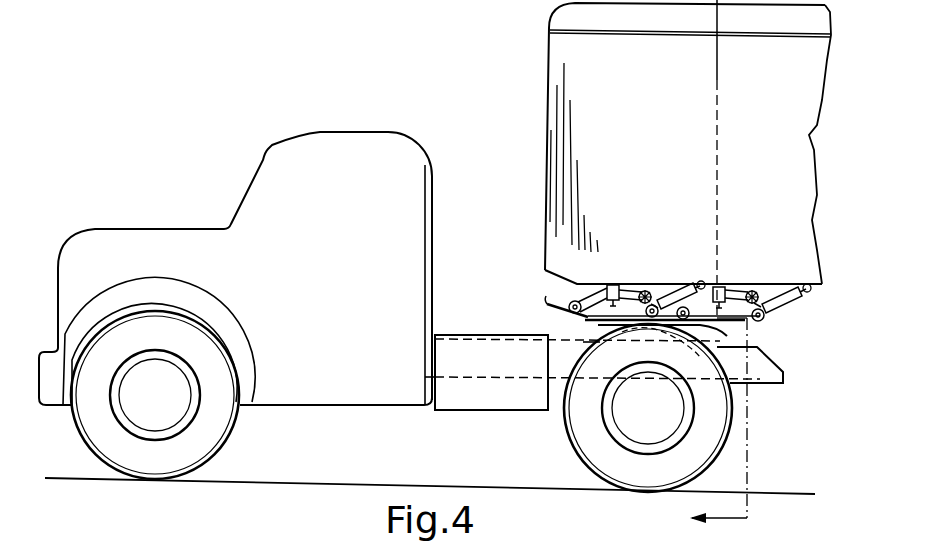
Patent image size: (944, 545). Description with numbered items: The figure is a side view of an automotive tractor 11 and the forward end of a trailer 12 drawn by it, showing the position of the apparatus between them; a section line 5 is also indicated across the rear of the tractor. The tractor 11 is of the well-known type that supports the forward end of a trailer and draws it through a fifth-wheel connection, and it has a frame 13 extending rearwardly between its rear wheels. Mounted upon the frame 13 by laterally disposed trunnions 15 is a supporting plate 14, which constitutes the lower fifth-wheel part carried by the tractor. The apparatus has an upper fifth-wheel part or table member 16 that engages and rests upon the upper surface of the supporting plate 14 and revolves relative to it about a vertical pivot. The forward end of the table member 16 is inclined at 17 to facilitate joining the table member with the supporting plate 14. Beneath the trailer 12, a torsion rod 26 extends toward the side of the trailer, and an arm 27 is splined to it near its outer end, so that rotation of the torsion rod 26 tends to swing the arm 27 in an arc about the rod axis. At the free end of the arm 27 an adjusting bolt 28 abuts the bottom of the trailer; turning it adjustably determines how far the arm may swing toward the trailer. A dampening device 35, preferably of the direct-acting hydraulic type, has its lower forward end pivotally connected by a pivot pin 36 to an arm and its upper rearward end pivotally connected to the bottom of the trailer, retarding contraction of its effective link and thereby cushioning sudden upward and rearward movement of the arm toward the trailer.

The section line 5- 5 is at (726, 266).
The automotive tractor 11 is at (335, 321).
The trailer 12 is at (649, 144).
The frame 13 is at (776, 372).
The supporting plate 14 is at (597, 326).
The trunnions 15 is at (666, 346).
The table member 16 is at (573, 319).
The inclined forward end 17 is at (549, 304).
The torsion rod 26 is at (647, 291).
The arm 27 is at (620, 287).
The adjusting bolt 28 is at (607, 286).
The dampening device 35 is at (700, 284).
The pivot pin 36 is at (762, 321).